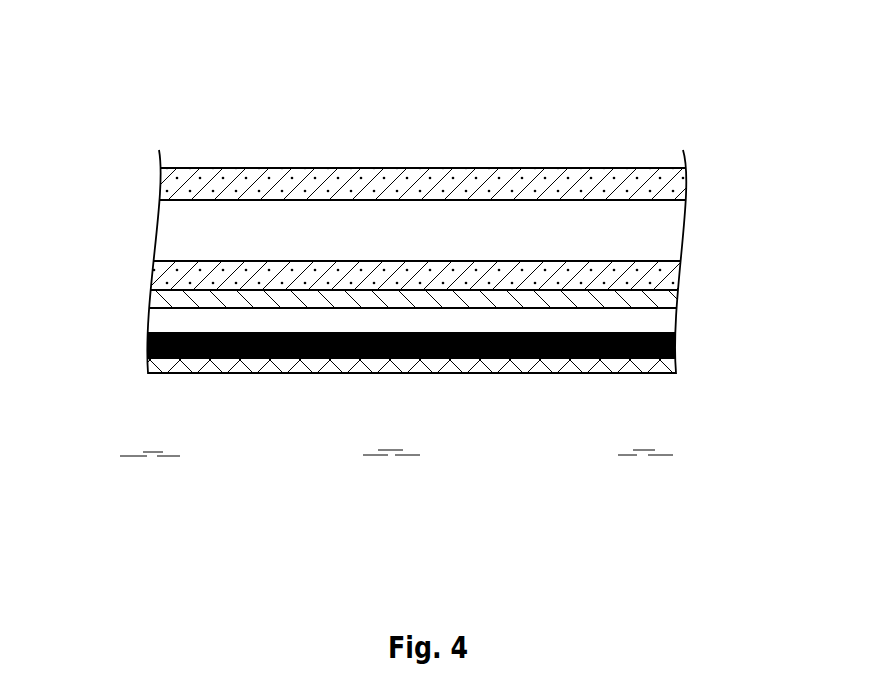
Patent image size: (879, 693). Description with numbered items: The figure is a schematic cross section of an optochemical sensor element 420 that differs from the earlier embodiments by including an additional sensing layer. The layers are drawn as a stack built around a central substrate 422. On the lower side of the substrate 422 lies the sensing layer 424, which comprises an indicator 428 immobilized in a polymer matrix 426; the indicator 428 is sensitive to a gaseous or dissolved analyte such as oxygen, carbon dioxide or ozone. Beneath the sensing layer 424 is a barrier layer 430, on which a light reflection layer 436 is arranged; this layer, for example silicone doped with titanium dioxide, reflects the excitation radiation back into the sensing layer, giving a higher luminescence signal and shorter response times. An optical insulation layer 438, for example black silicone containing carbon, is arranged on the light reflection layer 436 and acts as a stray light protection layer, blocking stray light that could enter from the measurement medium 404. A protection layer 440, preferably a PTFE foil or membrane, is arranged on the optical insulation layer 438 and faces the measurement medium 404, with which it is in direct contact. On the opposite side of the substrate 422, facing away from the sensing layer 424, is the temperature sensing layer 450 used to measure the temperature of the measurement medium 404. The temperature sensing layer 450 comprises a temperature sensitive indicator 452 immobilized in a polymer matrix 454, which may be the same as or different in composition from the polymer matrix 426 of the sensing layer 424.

The optochemical sensor element 420 is at (192, 127).
The substrate 422 is at (170, 233).
The sensing layer 424 is at (682, 267).
The polymer matrix 426 is at (636, 292).
The indicator 428 is at (653, 279).
The barrier layer 430 is at (630, 300).
The light reflection layer 436 is at (163, 322).
The optical insulation layer 438 is at (147, 353).
The protection layer 440 is at (212, 365).
The temperature sensing layer 450 is at (520, 168).
The temperature sensitive indicator 452 is at (632, 172).
The polymer matrix 454 is at (658, 187).
The measurement medium 404 is at (313, 480).